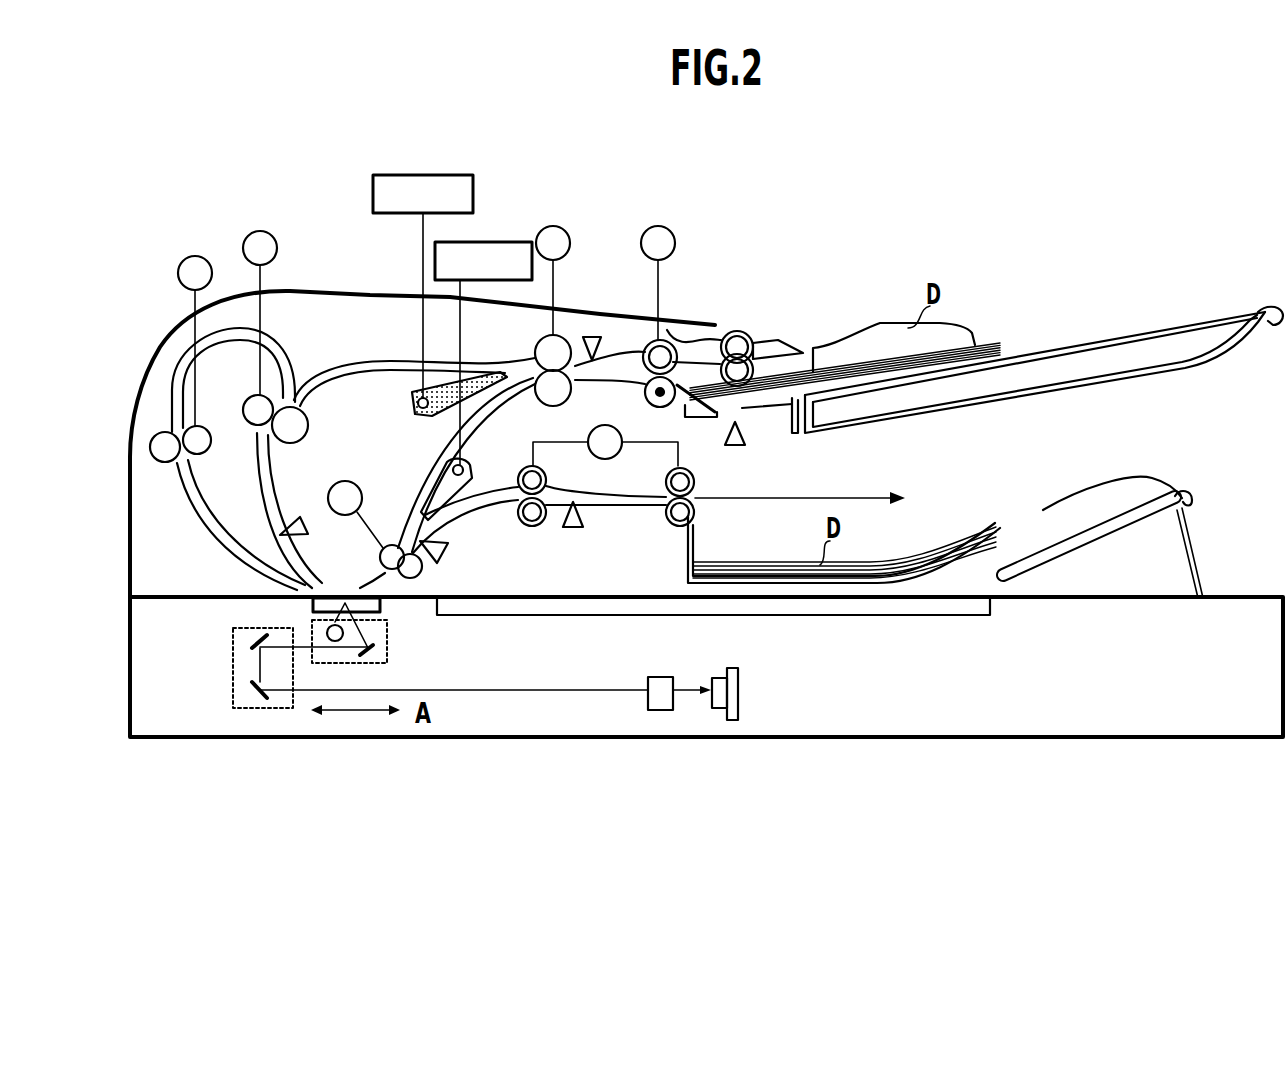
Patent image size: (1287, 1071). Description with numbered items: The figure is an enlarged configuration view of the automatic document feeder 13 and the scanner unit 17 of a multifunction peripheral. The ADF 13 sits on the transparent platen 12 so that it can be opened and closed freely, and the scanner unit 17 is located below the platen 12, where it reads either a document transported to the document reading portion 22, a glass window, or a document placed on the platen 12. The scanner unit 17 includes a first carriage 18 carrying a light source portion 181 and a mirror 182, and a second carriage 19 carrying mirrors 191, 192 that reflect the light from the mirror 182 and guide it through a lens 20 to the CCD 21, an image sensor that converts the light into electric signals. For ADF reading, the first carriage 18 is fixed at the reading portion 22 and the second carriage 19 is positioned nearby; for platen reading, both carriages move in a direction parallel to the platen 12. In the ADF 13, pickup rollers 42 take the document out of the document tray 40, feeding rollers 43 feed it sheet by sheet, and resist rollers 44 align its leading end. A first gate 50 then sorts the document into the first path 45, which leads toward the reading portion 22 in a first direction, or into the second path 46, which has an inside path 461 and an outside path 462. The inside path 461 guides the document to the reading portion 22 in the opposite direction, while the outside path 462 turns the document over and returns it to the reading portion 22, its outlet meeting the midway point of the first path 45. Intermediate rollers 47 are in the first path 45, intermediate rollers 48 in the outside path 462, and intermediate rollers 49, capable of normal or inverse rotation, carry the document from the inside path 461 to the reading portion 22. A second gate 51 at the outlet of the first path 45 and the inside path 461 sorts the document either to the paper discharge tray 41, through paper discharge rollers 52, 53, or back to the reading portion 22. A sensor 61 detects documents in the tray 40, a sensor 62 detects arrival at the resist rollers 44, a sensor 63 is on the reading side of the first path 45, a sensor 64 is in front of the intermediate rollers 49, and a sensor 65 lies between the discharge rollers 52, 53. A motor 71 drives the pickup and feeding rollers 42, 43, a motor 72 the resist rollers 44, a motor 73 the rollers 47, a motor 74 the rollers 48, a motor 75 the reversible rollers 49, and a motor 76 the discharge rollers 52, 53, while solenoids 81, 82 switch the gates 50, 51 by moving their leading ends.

The platen 12 is at (797, 618).
The automatic document feeder 13 is at (140, 351).
The scanner unit 17 is at (122, 670).
The first carriage 18 is at (388, 640).
The light source portion 181 is at (327, 628).
The mirror 182 is at (380, 655).
The second carriage 19 is at (233, 664).
The mirror 191 is at (252, 642).
The mirror 192 is at (252, 690).
The lens 20 is at (659, 677).
The CCD 21 is at (738, 692).
The document reading portion 22 is at (352, 592).
The document tray 40 is at (1078, 340).
The paper discharge tray 41 is at (1043, 510).
The pickup rollers 42 is at (752, 333).
The feeding rollers 43 is at (675, 340).
The resist rollers 44 is at (535, 351).
The first path 45 is at (341, 362).
The second path 46 is at (213, 496).
The inside path 461 is at (430, 468).
The outside path 462 is at (222, 537).
The intermediate rollers 47 is at (308, 420).
The intermediate rollers 48 is at (150, 448).
The intermediate rollers 49 is at (424, 572).
The first gate 50 is at (410, 382).
The second gate 51 is at (472, 468).
The paper discharge rollers 52 is at (530, 528).
The paper discharge rollers 53 is at (665, 522).
The sensor 61 is at (738, 447).
The sensor 62 is at (596, 335).
The sensor 63 is at (300, 516).
The sensor 64 is at (450, 547).
The sensor 65 is at (580, 532).
The motor 71 is at (671, 232).
The motor 72 is at (565, 232).
The motor 73 is at (247, 236).
The motor 74 is at (178, 272).
The motor 75 is at (345, 481).
The motor 76 is at (606, 425).
The solenoid 81 is at (373, 193).
The solenoid 82 is at (487, 242).